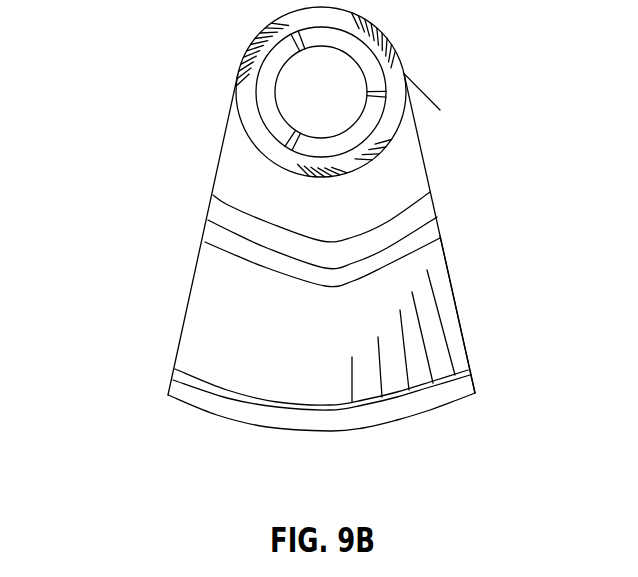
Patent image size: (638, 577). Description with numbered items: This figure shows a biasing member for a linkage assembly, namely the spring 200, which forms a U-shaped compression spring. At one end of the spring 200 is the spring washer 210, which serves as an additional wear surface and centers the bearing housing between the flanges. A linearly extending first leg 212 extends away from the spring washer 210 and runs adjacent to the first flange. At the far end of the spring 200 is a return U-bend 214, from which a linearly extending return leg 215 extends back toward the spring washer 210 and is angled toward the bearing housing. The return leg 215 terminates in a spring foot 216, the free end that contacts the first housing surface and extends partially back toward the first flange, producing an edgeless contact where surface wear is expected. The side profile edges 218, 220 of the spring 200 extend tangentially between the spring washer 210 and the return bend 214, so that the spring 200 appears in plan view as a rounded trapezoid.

The spring 200 is at (168, 300).
The spring washer 210 is at (397, 83).
The first leg 212 is at (238, 148).
The return U-bend 214 is at (225, 407).
The return leg 215 is at (448, 312).
The spring foot 216 is at (423, 215).
The side profile edge 218 is at (219, 183).
The side profile edge 220 is at (423, 167).